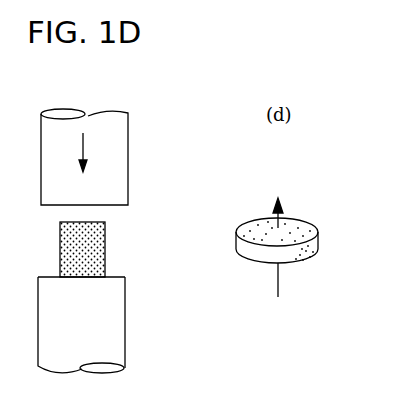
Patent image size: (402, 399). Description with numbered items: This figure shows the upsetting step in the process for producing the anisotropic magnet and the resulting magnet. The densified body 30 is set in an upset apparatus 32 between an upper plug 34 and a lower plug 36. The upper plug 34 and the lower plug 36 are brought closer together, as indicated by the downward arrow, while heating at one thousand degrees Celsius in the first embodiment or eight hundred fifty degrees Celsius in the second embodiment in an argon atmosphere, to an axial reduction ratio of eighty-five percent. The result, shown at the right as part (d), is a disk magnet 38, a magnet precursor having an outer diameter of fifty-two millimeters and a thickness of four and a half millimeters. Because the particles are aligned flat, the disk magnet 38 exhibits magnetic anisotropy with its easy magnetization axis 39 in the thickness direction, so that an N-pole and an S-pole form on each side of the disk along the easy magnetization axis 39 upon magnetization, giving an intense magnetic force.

The densified body 30 is at (101, 244).
The upset apparatus 32 is at (155, 304).
The upper plug 34 is at (128, 170).
The lower plug 36 is at (118, 345).
The disk magnet 38 is at (269, 186).
The easy magnetization axis 39 is at (278, 280).